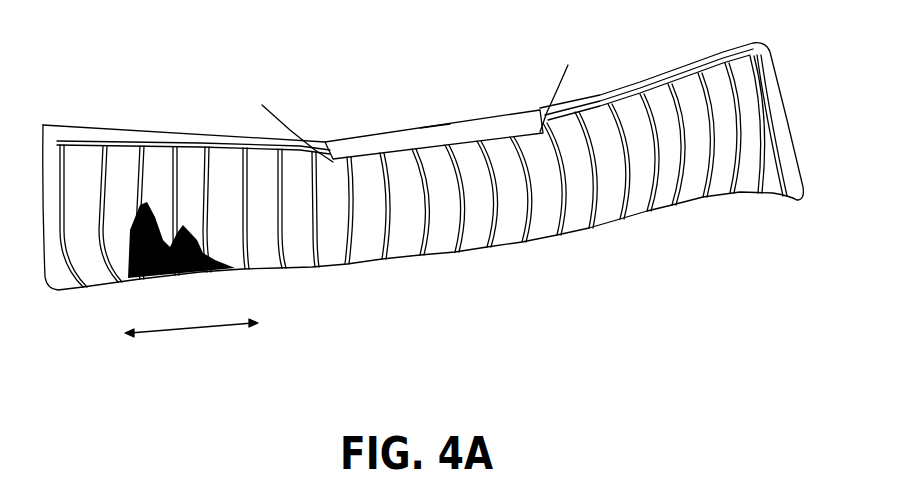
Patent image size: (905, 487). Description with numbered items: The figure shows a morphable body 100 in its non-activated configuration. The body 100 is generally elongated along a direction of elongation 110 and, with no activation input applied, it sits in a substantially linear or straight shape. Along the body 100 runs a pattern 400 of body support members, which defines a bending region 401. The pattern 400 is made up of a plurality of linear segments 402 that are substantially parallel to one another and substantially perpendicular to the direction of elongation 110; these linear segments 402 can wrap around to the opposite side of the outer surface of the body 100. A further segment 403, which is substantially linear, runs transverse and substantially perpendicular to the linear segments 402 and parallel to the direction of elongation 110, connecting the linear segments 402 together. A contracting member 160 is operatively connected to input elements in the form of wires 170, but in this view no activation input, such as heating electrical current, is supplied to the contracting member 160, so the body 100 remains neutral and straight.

The body 100 is at (176, 92).
The direction of elongation 110 is at (193, 331).
The contracting member 160 is at (435, 127).
The wires 170 is at (283, 115).
The pattern 400 is at (432, 280).
The bending region 401 is at (407, 102).
The linear segments 402 is at (655, 213).
The segment 403 is at (652, 82).